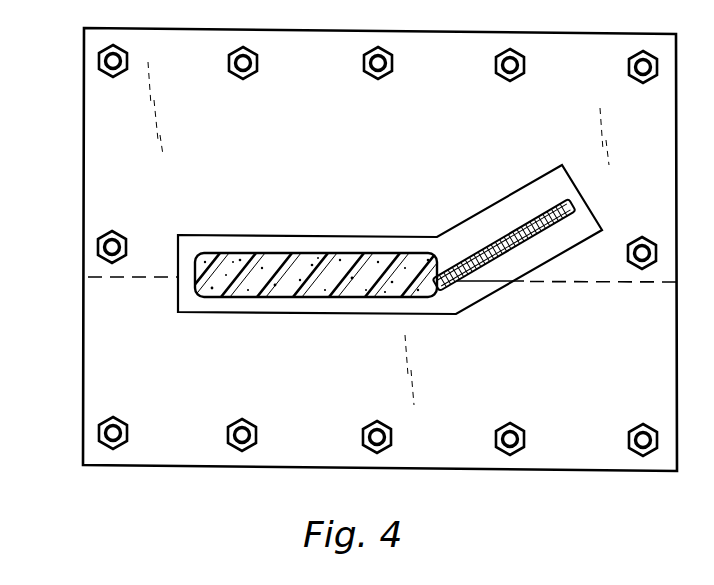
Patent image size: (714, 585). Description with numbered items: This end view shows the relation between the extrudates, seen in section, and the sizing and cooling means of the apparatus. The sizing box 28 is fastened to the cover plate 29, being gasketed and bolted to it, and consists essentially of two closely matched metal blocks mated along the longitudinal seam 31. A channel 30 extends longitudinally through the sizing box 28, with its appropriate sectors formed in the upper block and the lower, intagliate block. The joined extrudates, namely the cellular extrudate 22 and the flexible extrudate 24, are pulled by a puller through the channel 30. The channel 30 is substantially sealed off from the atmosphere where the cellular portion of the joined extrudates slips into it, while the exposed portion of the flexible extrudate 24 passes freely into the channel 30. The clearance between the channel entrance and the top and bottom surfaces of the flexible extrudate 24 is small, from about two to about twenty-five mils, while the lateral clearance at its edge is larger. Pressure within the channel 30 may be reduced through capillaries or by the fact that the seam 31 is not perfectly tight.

The cover plate 29 is at (110, 129).
The sizing box 28 is at (192, 306).
The extrudate 22 is at (197, 285).
The channel 30 is at (210, 298).
The flexible extrudate 24 is at (538, 236).
The longitudinal seam 31 is at (195, 280).